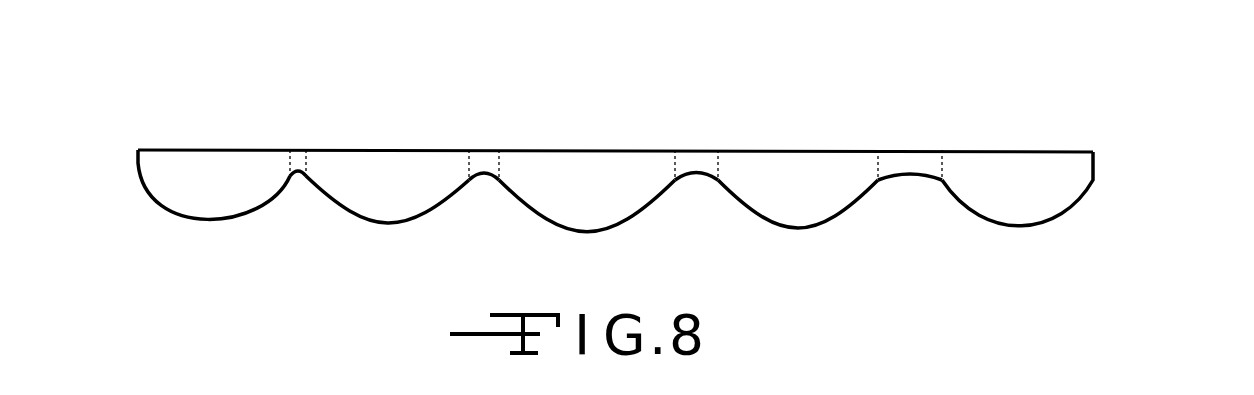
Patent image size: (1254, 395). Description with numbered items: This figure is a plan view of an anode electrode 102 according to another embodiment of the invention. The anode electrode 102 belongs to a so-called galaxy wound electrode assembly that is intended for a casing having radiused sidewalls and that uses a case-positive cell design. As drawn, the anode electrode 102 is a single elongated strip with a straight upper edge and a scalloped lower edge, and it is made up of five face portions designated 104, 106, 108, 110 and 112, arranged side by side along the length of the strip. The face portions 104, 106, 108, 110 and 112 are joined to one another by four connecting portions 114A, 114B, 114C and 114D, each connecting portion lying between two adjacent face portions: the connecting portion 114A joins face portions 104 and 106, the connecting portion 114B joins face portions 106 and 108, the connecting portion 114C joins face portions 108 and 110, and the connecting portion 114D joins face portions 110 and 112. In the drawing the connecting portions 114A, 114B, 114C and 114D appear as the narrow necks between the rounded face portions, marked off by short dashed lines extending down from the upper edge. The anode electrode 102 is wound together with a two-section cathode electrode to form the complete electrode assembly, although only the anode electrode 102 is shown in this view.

The anode electrode 102 is at (1197, 127).
The face portion 104 is at (205, 178).
The face portion 106 is at (383, 178).
The face portion 108 is at (582, 177).
The face portion 110 is at (802, 177).
The face portion 112 is at (1007, 170).
The connecting portion 114A is at (297, 173).
The connecting portion 114B is at (482, 174).
The connecting portion 114C is at (695, 166).
The connecting portion 114D is at (907, 168).